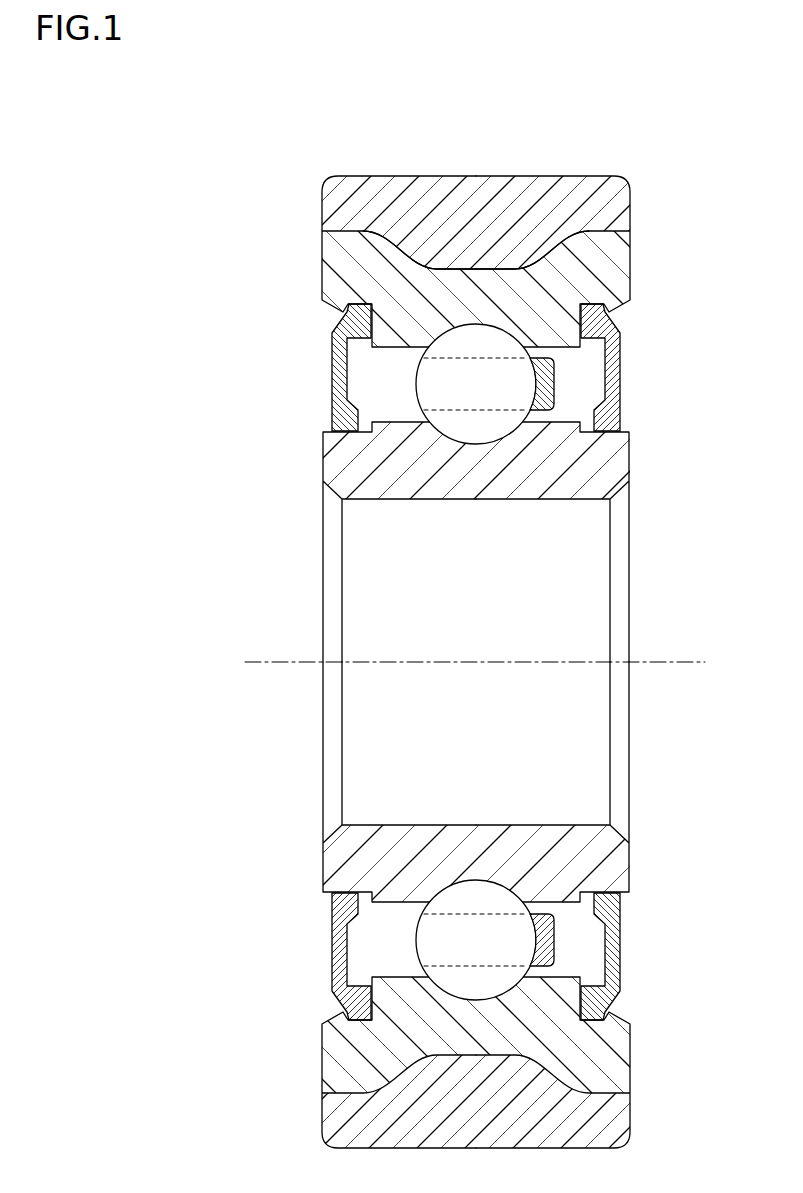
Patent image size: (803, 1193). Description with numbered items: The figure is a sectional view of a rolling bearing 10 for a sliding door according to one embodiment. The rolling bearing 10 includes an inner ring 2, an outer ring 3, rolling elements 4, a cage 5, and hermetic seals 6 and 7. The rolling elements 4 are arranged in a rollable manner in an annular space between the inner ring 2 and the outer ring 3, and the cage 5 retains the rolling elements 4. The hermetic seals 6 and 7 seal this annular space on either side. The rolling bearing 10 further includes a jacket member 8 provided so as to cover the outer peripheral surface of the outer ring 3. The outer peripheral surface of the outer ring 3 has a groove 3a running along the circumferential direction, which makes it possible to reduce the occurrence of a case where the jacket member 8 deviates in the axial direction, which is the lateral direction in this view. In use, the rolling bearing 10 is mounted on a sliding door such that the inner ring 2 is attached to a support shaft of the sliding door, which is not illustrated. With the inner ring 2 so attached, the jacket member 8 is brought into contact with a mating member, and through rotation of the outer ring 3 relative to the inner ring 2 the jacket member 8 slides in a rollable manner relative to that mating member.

The rolling bearing for a sliding door 10 is at (621, 161).
The inner ring 2 is at (624, 456).
The outer ring 3 is at (622, 264).
The groove 3a is at (455, 268).
The rolling elements 4 is at (482, 445).
The cage 5 is at (556, 385).
The hermetic seal 6 is at (331, 370).
The hermetic seal 7 is at (622, 370).
The jacket member 8 is at (481, 190).